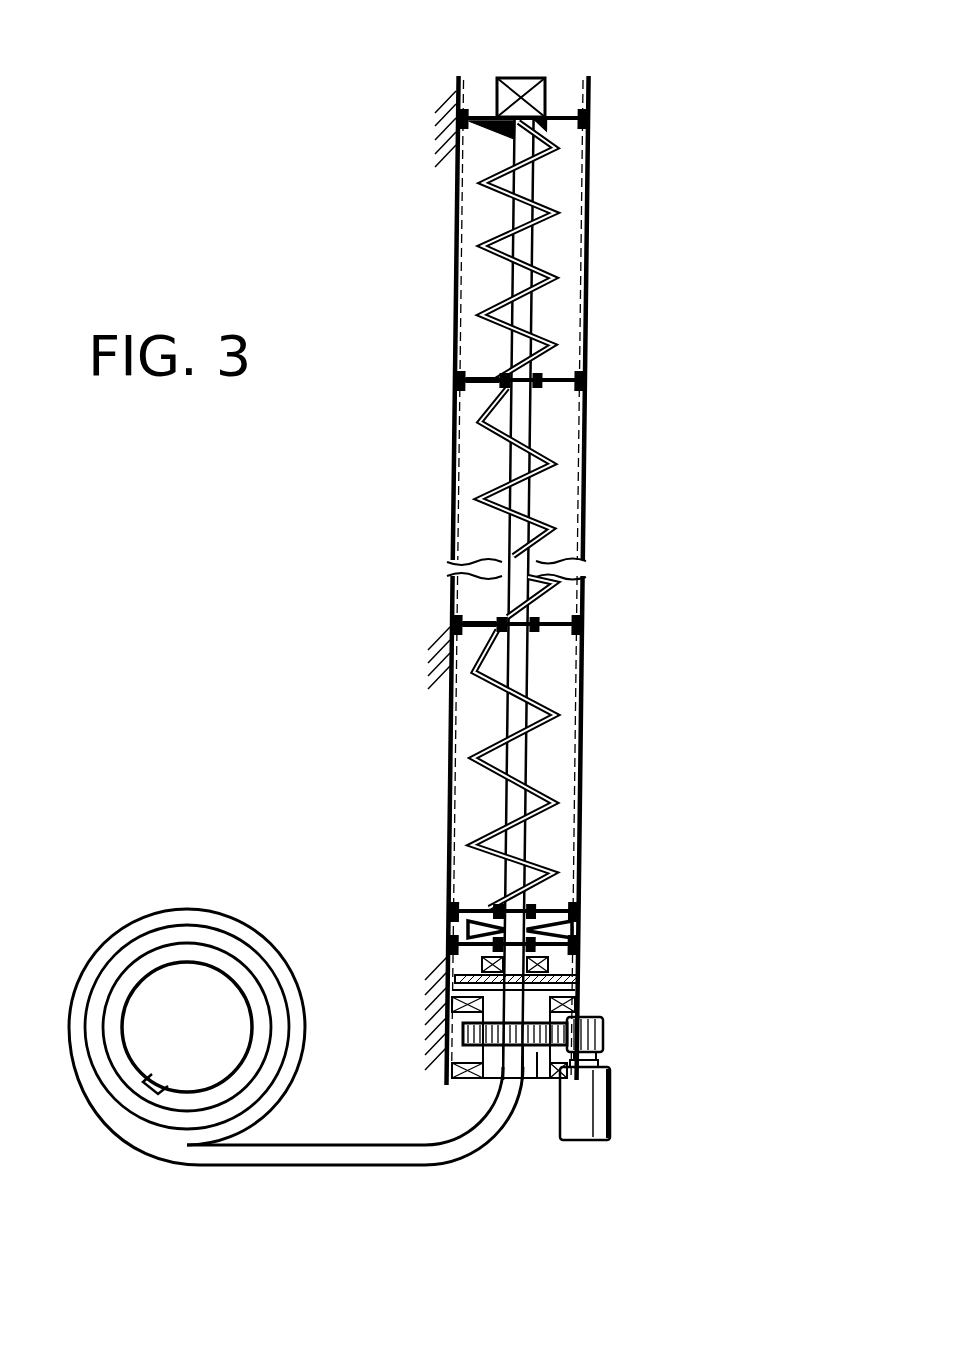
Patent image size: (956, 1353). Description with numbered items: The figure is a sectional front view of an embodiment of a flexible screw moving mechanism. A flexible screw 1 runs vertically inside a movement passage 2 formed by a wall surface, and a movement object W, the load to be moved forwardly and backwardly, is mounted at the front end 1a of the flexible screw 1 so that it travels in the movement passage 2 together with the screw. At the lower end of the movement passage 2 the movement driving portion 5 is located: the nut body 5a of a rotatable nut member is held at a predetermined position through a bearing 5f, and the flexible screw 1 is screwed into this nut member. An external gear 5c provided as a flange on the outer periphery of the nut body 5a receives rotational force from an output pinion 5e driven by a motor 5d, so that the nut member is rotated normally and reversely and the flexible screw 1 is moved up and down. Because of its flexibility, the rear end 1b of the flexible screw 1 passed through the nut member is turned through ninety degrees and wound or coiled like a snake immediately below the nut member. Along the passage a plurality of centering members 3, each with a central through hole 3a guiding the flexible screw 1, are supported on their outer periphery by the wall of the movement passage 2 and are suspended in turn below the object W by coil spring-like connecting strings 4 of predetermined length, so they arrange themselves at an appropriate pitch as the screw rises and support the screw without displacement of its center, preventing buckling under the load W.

The movement object W is at (526, 86).
The flexible screw 1 is at (527, 246).
The front end of the flexible screw 1a is at (518, 122).
The rear end of the flexible screw 1b is at (170, 1090).
The movement passage 2 is at (580, 472).
The centering member 3 is at (588, 124).
The through hole 3a is at (505, 388).
The connecting string 4 is at (560, 152).
The movement driving portion 5 is at (590, 1154).
The nut body 5a is at (537, 1057).
The external gear 5c is at (463, 1037).
The motor 5d is at (605, 1118).
The output pinion 5e is at (603, 1037).
The bearing 5f is at (577, 990).